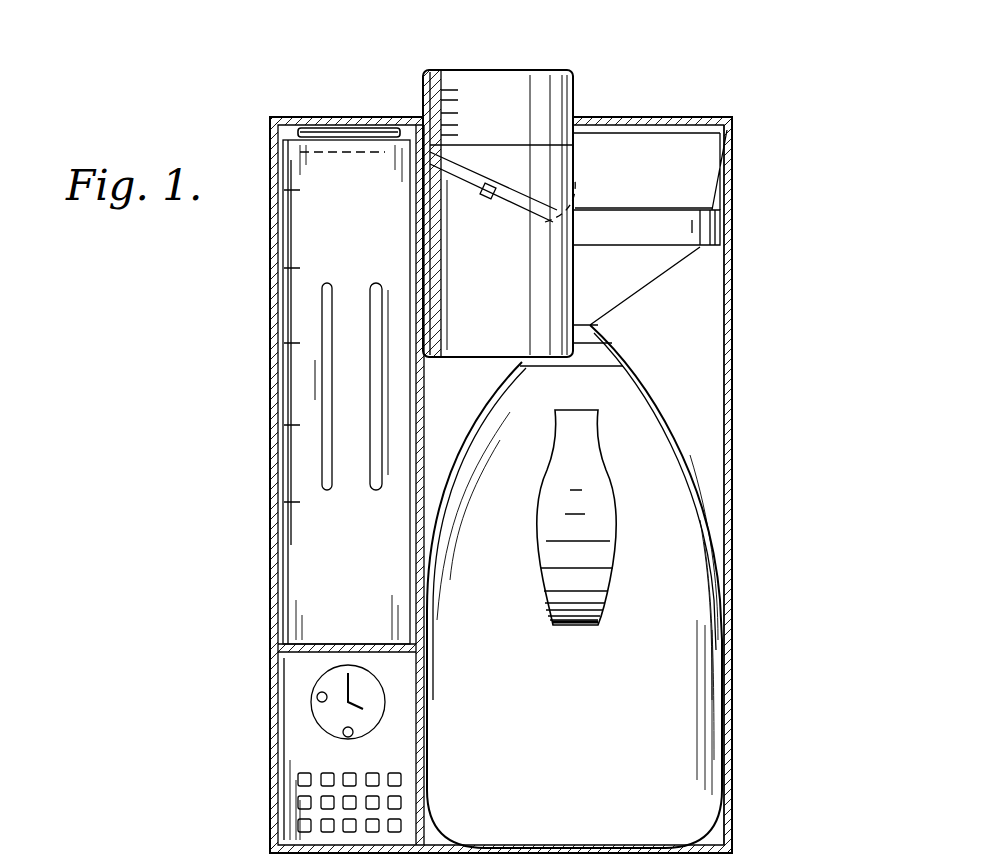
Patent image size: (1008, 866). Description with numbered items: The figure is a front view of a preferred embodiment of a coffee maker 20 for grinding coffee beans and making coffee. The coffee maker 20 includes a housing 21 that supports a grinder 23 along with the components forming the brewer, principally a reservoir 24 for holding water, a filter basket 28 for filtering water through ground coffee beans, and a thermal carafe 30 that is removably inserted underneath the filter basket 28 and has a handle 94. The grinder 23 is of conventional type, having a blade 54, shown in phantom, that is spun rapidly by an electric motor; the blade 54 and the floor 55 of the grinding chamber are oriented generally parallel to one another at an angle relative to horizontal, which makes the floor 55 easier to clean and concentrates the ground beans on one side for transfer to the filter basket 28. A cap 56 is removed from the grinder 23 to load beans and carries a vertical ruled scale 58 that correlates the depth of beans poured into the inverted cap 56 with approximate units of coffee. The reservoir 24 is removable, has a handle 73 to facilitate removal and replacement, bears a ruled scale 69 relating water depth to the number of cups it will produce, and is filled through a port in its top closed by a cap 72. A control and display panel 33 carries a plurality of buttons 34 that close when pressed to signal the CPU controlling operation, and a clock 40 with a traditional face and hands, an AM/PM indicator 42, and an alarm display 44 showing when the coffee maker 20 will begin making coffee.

The coffee maker 20 is at (778, 102).
The housing 21 is at (727, 622).
The grinder 23 is at (580, 297).
The reservoir 24 is at (318, 306).
The filter basket 28 is at (707, 177).
The thermal carafe 30 is at (690, 550).
The control and display panel 33 is at (295, 727).
The buttons 34 is at (300, 826).
The clock 40 is at (323, 677).
The AM/PM indicator 42 is at (317, 697).
The alarm display 44 is at (345, 735).
The blade 54 is at (547, 174).
The floor of the grinding chamber 55 is at (466, 150).
The cap 56 is at (580, 36).
The ruled scale 58 is at (440, 72).
The ruled scale 69 is at (290, 455).
The cap 72 is at (343, 130).
The handle 73 is at (347, 390).
The handle 94 is at (594, 492).